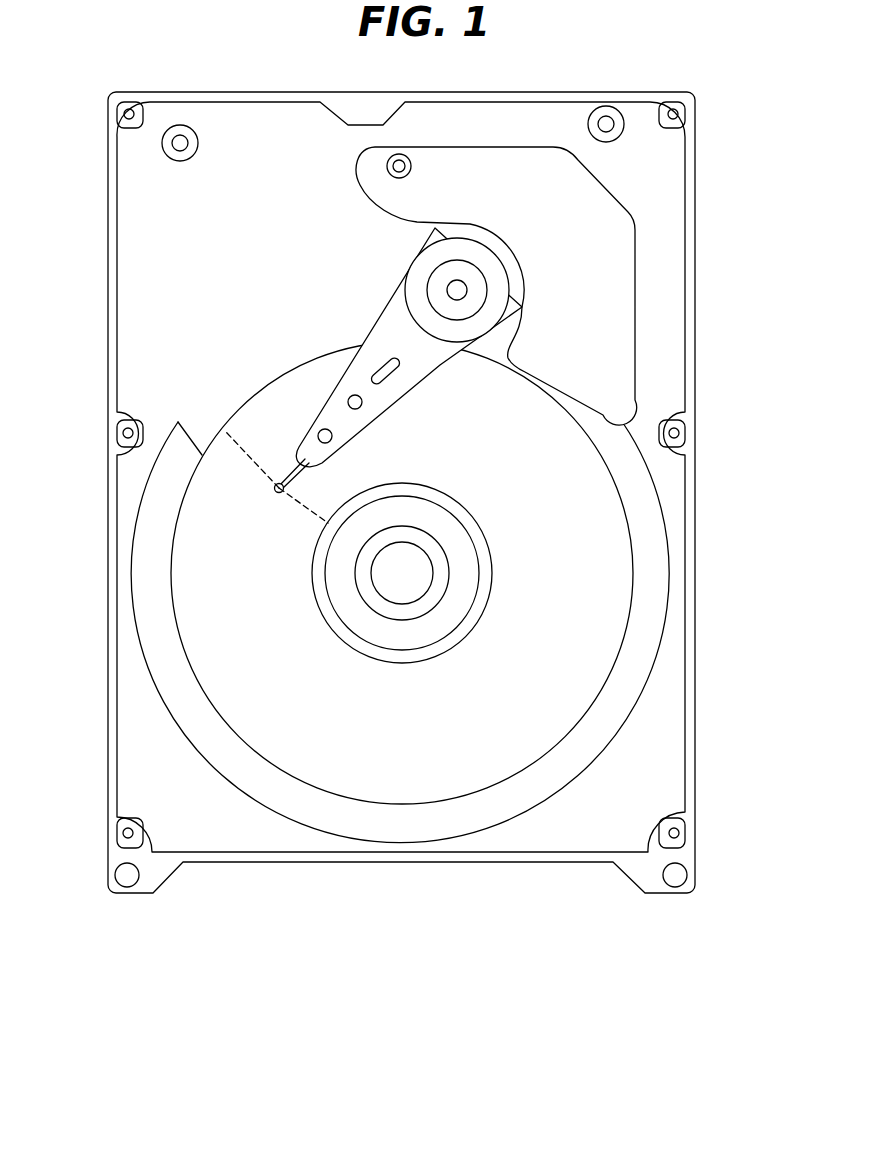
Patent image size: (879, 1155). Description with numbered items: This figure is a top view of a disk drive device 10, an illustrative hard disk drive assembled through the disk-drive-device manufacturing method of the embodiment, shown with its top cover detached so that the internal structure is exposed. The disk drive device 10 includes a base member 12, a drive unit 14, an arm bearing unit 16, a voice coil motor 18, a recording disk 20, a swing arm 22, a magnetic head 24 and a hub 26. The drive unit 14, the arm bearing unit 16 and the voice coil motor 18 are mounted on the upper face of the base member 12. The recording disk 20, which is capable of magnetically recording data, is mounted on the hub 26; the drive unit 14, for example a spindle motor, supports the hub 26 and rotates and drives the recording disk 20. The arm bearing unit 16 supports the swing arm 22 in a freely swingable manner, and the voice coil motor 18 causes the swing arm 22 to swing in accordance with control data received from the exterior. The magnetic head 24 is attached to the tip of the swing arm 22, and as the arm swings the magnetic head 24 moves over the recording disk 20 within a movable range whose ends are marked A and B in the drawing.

The disk drive device 10 is at (414, 984).
The base member 12 is at (695, 197).
The drive unit 14 is at (478, 541).
The arm bearing unit 16 is at (509, 272).
The voice coil motor 18 is at (592, 183).
The recording disk 20 is at (600, 604).
The swing arm 22 is at (370, 328).
The magnetic head 24 is at (274, 492).
The hub 26 is at (452, 610).